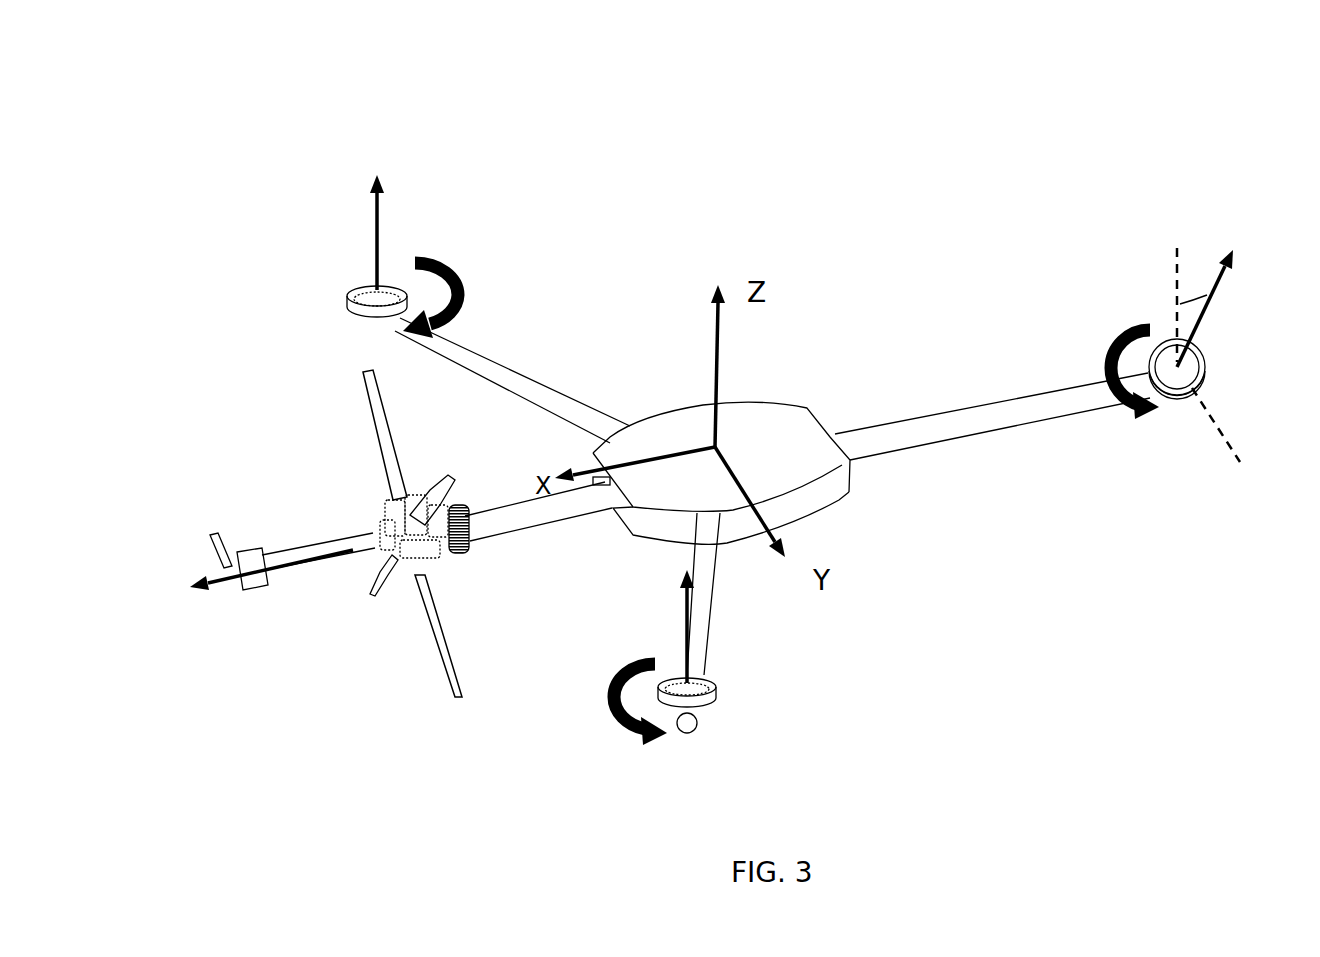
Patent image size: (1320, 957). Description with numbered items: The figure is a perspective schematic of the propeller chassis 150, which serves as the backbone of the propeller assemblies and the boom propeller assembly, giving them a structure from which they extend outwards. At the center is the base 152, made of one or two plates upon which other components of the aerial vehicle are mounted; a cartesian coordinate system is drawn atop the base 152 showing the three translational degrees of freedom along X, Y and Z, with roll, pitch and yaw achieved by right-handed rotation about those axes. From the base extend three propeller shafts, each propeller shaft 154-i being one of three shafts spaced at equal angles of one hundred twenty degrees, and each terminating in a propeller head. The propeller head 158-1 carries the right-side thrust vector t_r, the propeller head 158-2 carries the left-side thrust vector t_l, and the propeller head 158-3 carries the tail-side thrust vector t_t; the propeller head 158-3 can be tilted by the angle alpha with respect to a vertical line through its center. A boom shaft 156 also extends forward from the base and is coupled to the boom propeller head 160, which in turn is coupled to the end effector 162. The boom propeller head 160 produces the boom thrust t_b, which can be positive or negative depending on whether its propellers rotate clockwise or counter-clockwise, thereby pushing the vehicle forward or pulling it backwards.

The propeller chassis 150 is at (313, 92).
The base 152 is at (762, 403).
The propeller shaft 154-i is at (528, 377).
The front boom 156 is at (482, 508).
The propeller head 158-1 is at (392, 330).
The propeller head 158-2 is at (726, 706).
The propeller head 158-3 is at (1173, 405).
The boom propeller head 160 is at (465, 576).
The end effector 162 is at (268, 605).